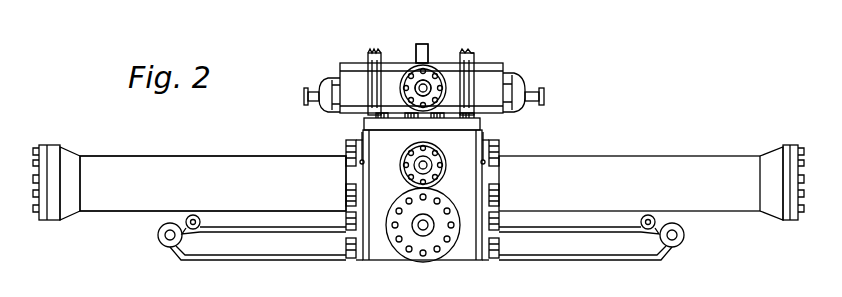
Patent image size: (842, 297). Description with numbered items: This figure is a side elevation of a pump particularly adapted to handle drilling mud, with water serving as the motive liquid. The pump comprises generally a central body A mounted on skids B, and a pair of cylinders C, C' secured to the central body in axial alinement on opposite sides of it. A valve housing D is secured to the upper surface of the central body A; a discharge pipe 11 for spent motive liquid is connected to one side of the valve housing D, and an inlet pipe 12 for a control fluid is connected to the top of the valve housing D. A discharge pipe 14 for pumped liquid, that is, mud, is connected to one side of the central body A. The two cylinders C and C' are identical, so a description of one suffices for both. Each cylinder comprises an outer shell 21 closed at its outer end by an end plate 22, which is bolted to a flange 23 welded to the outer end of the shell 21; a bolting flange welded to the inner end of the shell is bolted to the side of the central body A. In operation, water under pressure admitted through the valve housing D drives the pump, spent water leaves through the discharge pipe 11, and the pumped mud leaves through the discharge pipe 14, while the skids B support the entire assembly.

The valve housing D is at (444, 56).
The inlet pipe for control fluid 12 is at (423, 44).
The discharge pipe for spent motive liquid 11 is at (418, 86).
The central body A is at (488, 136).
The discharge pipe for pumped liquid 14 is at (404, 166).
The cylinder C is at (213, 170).
The cylinder C' is at (651, 174).
The outer shell 21 is at (134, 212).
The end plate 22 is at (73, 213).
The flange 23 is at (43, 221).
The skids B is at (312, 254).